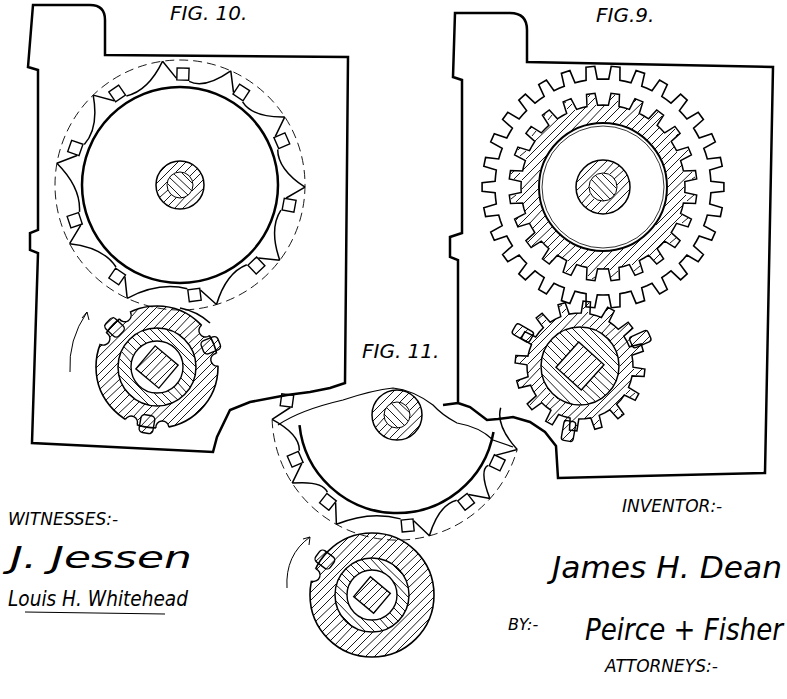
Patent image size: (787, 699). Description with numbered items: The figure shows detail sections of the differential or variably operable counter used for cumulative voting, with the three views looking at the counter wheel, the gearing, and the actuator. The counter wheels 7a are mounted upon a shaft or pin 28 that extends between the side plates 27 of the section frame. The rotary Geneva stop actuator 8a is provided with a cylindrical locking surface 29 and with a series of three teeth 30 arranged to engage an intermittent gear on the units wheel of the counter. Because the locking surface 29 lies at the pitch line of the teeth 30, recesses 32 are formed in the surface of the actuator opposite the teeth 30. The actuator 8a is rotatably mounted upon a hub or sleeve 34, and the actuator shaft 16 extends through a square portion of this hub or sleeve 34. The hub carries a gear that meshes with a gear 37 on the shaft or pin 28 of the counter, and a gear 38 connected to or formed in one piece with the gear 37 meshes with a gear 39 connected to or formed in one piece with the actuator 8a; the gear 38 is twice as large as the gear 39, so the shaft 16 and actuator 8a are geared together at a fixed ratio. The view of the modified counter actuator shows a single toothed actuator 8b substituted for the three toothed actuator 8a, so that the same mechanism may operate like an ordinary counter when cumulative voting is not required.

In FIG. 10, the counter wheels 7a is at (293, 141).
In FIG. 11, the counter wheels 7a is at (327, 521).
In FIG. 10, the rotary Geneva stop actuator 8a is at (207, 398).
In FIG. 11, the single toothed actuator 8b is at (323, 614).
In FIG. 10, the shafts 16 is at (142, 370).
In FIG. 9, the shafts 16 is at (607, 367).
In FIG. 11, the shafts 16 is at (380, 588).
In FIG. 10, the side plates 27 is at (462, 304).
In FIG. 10, the shaft or pin 28 is at (195, 175).
In FIG. 9, the shaft or pin 28 is at (622, 190).
In FIG. 11, the shaft or pin 28 is at (378, 428).
In FIG. 10, the cylindrical locking surface 29 is at (198, 318).
In FIG. 10, the teeth 30 is at (106, 320).
In FIG. 9, the teeth 30 is at (520, 332).
In FIG. 10, the recesses 32 is at (124, 320).
In FIG. 10, the hub or sleeve 34 is at (198, 372).
In FIG. 9, the hub or sleeve 34 is at (622, 392).
In FIG. 11, the hub or sleeve 34 is at (397, 617).
In FIG. 9, the gear 37 is at (684, 221).
In FIG. 9, the gear 38 is at (684, 277).
In FIG. 9, the gear 39 is at (624, 418).